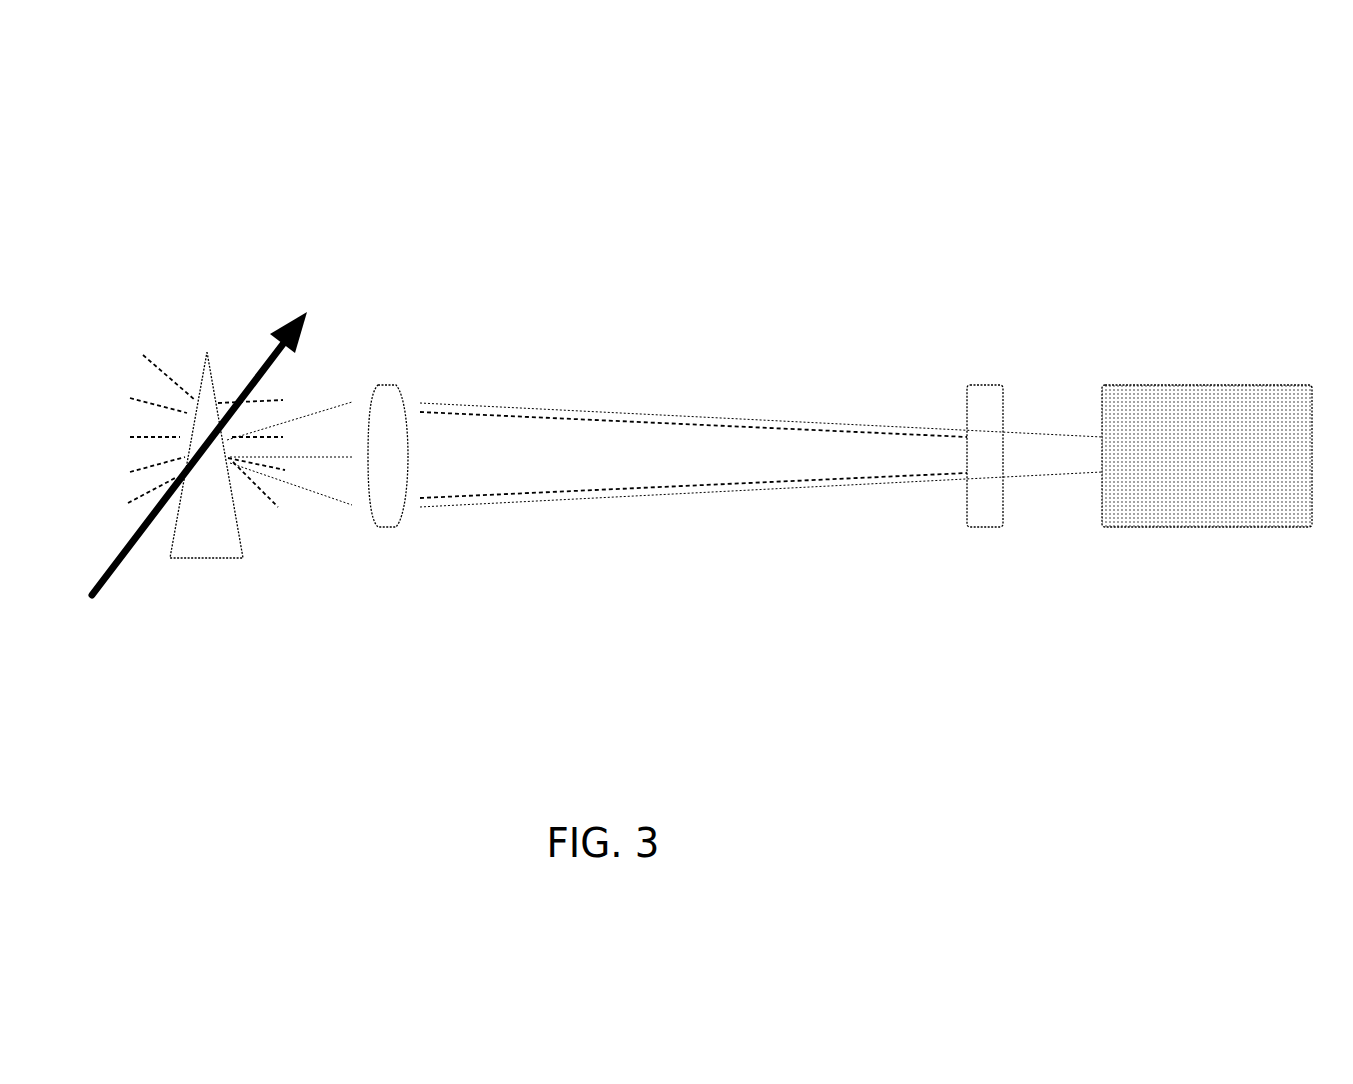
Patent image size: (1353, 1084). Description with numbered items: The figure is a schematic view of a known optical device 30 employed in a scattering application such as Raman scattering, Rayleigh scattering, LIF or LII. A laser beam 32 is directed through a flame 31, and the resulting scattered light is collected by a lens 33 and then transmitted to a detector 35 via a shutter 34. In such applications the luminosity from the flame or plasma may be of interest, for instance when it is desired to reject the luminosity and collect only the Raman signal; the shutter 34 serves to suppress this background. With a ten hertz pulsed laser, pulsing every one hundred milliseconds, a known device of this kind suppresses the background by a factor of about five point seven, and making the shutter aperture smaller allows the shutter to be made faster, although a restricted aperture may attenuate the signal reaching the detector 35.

The optical device 30 is at (724, 297).
The flame 31 is at (208, 347).
The laser beam 32 is at (297, 310).
The lens 33 is at (388, 383).
The shutter 34 is at (985, 383).
The detector 35 is at (1275, 377).